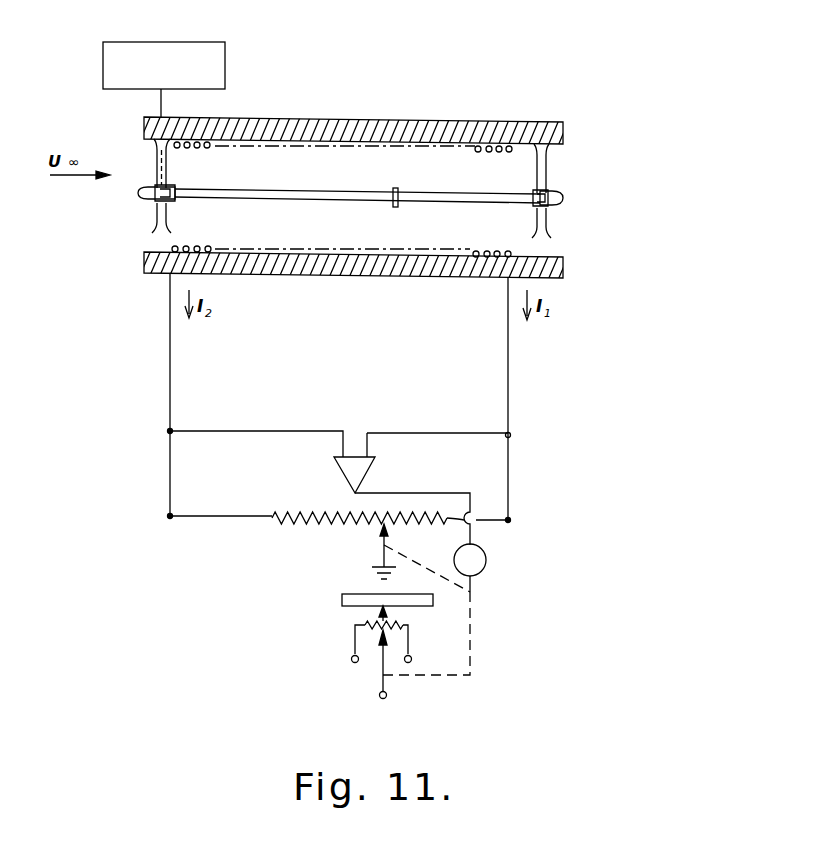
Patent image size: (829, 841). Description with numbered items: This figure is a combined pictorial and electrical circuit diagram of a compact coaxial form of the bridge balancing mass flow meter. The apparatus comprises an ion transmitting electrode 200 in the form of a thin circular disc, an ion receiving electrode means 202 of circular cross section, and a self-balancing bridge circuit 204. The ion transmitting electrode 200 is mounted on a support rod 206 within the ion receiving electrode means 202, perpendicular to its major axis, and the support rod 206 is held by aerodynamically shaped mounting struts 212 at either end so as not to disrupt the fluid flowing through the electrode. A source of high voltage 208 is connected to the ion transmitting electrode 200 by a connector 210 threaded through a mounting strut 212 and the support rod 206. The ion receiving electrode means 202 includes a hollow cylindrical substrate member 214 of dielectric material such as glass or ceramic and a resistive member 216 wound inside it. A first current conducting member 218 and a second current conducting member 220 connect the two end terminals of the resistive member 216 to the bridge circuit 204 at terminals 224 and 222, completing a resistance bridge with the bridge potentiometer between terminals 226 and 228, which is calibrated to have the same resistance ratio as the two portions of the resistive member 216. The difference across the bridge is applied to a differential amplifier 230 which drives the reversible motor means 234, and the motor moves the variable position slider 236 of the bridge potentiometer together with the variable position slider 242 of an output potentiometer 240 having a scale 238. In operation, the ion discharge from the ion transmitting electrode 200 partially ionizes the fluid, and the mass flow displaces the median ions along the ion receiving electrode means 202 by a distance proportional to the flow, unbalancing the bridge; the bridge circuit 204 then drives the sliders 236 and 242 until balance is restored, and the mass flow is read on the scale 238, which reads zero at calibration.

The ion transmitting electrode 200 is at (420, 208).
The ion receiving electrode means 202 is at (378, 202).
The self-balancing bridge circuit 204 is at (577, 474).
The support rod 206 is at (350, 207).
The source of high voltage 208 is at (195, 65).
The connector 210 is at (128, 103).
The mounting struts 212 is at (376, 188).
The hollow cylindrical substrate member 214 is at (359, 116).
The resistive member 216 is at (342, 199).
The first current conducting member 218 is at (540, 356).
The second current conducting member 220 is at (130, 352).
The bridge circuit terminal 222 is at (218, 469).
The bridge circuit terminal 224 is at (469, 473).
The bridge potentiometer terminal 226 is at (182, 517).
The bridge potentiometer terminal 228 is at (510, 521).
The differential amplifier 230 is at (402, 501).
The reversible motor means 234 is at (498, 568).
The variable position slider 236 is at (391, 558).
The scale 238 is at (353, 607).
The output potentiometer 240 is at (402, 640).
The variable position slider 242 is at (352, 665).